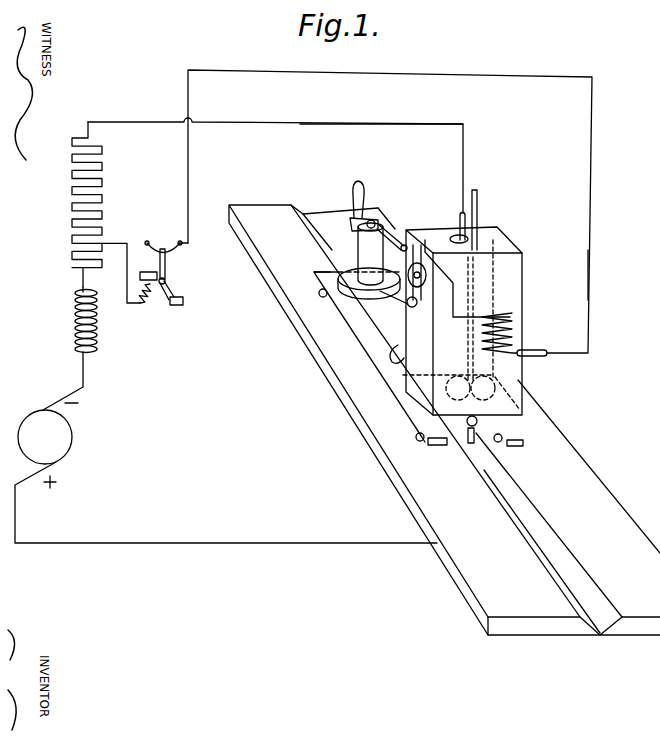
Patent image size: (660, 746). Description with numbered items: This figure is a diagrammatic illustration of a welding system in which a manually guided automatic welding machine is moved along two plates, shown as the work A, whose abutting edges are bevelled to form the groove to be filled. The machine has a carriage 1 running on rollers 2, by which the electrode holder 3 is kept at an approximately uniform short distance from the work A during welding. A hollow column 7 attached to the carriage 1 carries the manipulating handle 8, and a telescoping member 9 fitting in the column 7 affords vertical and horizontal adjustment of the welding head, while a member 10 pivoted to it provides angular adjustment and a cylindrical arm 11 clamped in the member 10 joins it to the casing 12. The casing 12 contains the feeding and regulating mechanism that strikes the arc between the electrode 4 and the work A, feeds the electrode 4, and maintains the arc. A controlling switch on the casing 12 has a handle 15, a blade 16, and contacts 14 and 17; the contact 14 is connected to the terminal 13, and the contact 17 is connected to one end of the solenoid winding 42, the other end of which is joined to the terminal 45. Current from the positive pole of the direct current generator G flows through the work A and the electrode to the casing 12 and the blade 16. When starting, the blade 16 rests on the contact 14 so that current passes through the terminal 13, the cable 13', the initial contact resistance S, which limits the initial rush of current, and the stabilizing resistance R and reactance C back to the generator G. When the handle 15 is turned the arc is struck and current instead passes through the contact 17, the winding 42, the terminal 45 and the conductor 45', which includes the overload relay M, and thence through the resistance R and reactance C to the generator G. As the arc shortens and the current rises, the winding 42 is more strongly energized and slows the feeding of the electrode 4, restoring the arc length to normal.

The carriage 1 is at (380, 350).
The rollers 2 is at (320, 293).
The electrode holder 3 is at (467, 425).
The electrode 4 is at (476, 444).
The column 7 is at (340, 272).
The manipulating handle 8 is at (352, 184).
The telescoping member 9 is at (358, 232).
The pivoted member 10 is at (374, 220).
The cylindrical arm 11 is at (369, 291).
The casing 12 is at (523, 280).
The terminal 13 is at (451, 220).
The cable 13' is at (379, 114).
The switch contact 14 is at (420, 290).
The switch handle 15 is at (403, 352).
The switch blade 16 is at (406, 303).
The switch contact 17 is at (395, 282).
The solenoid winding 42 is at (512, 331).
The terminal 45 is at (544, 366).
The conductor 45' is at (606, 275).
The work A is at (628, 632).
The reactance C is at (77, 348).
The direct current generator G is at (226, 473).
The overload relay M is at (166, 273).
The resistance R is at (129, 273).
The additional resistance S is at (94, 204).